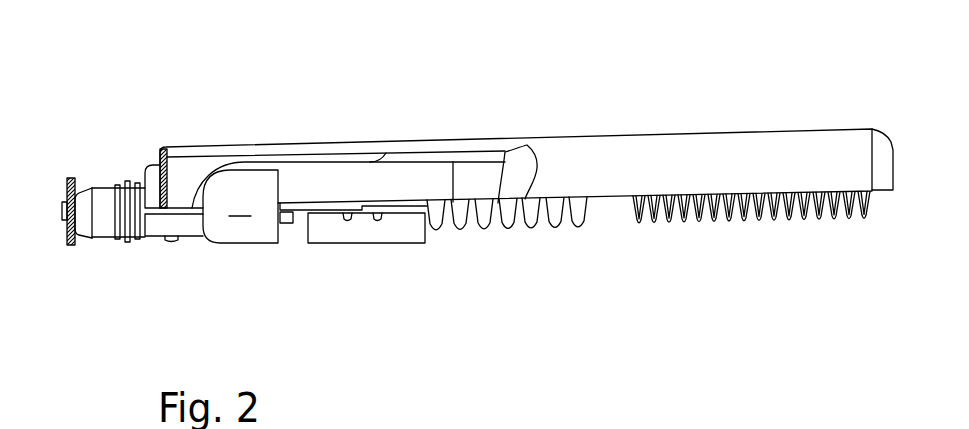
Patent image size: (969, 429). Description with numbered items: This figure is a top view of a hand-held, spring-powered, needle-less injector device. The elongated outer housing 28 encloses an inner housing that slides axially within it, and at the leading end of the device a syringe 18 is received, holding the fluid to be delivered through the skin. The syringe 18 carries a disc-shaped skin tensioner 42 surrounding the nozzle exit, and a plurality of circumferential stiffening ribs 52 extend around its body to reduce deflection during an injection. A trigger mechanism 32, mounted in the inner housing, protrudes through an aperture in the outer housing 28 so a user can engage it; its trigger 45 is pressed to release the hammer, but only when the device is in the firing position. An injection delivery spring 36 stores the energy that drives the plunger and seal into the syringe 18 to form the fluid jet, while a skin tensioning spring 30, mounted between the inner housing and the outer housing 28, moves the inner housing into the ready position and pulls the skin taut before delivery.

The outer housing 28 is at (668, 133).
The syringe 18 is at (93, 188).
The skin tensioner 42 is at (70, 245).
The circumferential stiffening ribs 52 is at (127, 238).
The trigger 45 is at (240, 206).
The trigger mechanism 32 is at (302, 210).
The injection delivery spring 36 is at (487, 233).
The skin tensioning spring 30 is at (698, 223).